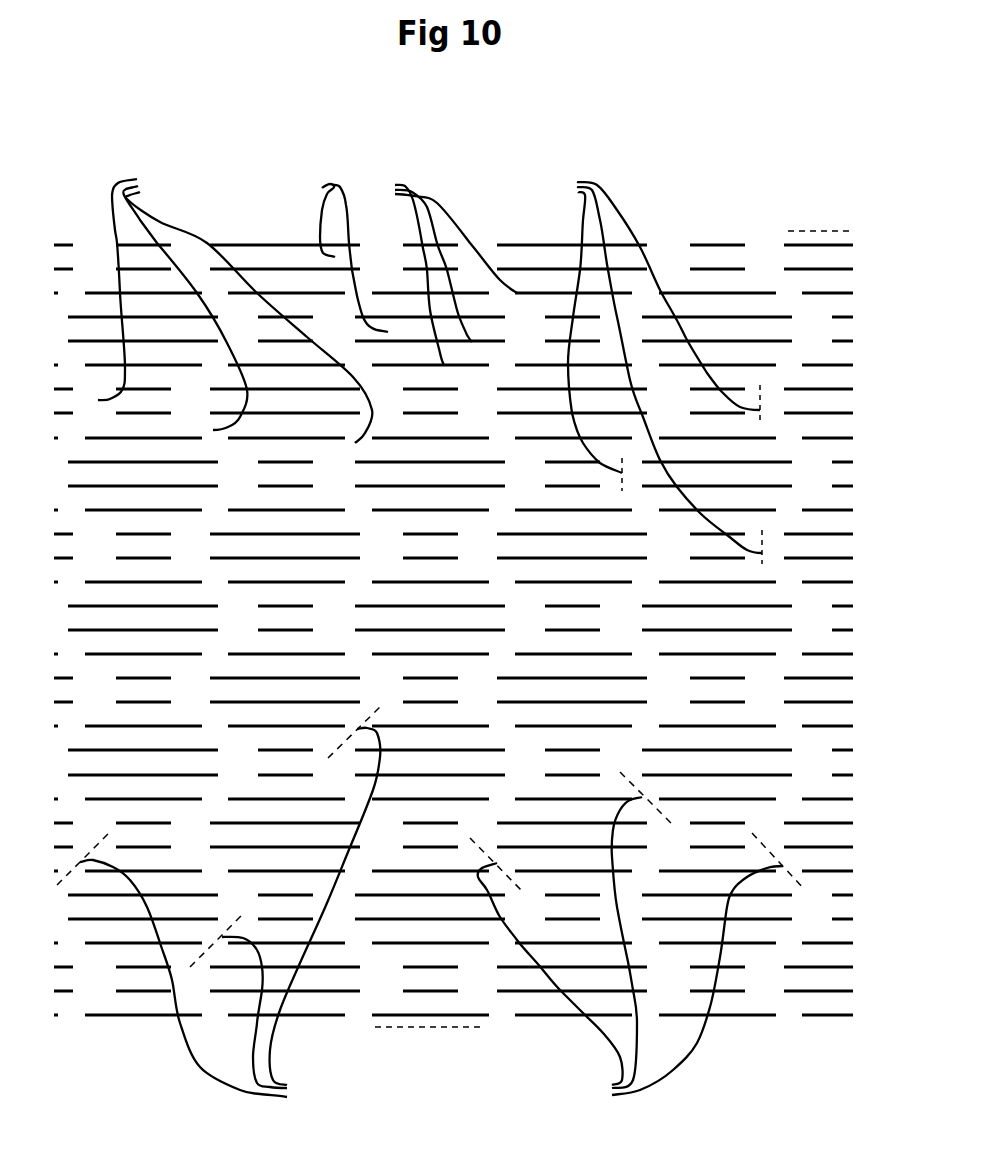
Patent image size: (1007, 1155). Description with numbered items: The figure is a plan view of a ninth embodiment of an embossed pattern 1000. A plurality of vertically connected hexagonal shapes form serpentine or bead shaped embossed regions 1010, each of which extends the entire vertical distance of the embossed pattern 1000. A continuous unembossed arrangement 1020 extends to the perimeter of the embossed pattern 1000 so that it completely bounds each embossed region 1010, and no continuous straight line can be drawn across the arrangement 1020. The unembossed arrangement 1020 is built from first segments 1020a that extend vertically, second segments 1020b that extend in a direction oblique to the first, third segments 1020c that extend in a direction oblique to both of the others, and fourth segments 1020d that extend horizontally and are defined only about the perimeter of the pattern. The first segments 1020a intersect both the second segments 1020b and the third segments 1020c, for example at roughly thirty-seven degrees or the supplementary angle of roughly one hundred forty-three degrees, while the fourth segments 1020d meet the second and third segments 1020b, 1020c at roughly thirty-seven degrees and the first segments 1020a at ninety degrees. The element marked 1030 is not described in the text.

The embossed pattern 1000 is at (782, 114).
The embossed region 1010 is at (334, 254).
The unembossed arrangement 1020 is at (235, 309).
The first segments 1020a is at (644, 370).
The second segments 1020b is at (219, 903).
The third segments 1020c is at (637, 936).
The fourth segments 1020d is at (822, 230).
The secondary yarn 1030 is at (435, 270).